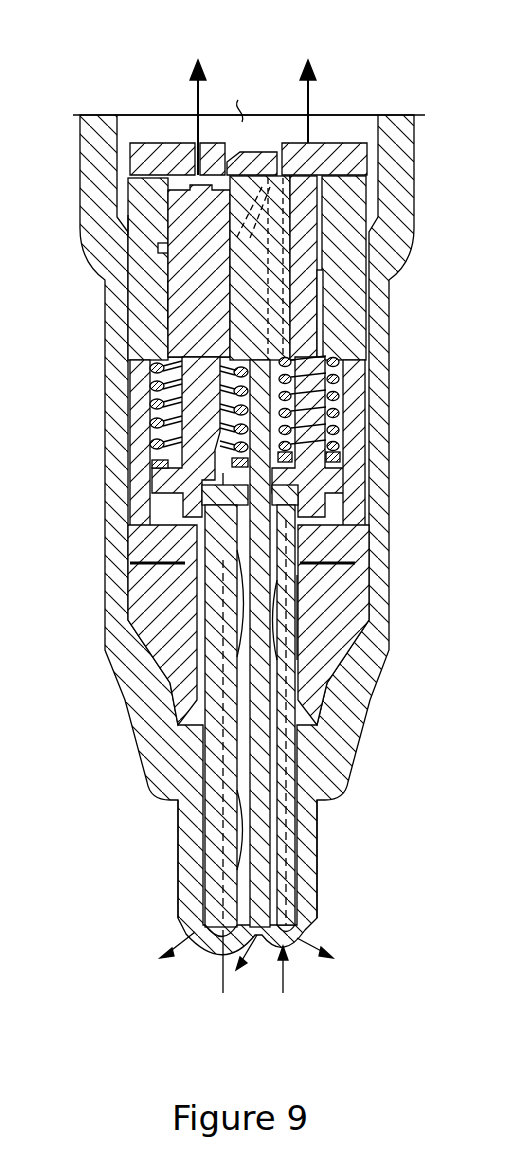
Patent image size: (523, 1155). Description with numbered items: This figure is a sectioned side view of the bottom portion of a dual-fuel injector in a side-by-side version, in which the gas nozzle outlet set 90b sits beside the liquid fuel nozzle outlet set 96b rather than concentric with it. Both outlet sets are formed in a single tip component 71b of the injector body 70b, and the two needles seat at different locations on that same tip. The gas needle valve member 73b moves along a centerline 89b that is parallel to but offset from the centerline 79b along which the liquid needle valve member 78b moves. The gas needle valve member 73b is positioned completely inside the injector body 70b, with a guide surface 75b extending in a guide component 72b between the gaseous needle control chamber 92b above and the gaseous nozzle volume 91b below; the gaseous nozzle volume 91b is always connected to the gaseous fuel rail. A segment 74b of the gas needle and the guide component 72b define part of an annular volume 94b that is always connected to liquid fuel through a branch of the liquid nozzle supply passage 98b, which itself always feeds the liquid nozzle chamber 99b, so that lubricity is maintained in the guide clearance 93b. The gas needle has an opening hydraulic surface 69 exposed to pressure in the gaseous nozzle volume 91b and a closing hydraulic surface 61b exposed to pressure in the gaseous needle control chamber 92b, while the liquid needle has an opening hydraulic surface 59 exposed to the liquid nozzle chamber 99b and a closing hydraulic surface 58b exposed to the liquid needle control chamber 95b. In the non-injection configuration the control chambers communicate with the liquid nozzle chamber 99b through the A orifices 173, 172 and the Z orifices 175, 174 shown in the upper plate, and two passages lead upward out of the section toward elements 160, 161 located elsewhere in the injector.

The fuel supply line 160 is at (310, 58).
The fuel supply line 161 is at (198, 58).
The A orifice 173 is at (195, 178).
The Z orifice 175 is at (233, 173).
The Z orifice 174 is at (293, 173).
The closing hydraulic surface 58b is at (290, 173).
The gaseous needle control chamber 92b is at (190, 168).
The liquid needle control chamber 95b is at (337, 160).
The closing hydraulic surface 61b is at (177, 180).
The gas needle valve member 73b is at (177, 217).
The annular volume 94b is at (160, 242).
The segment 74b is at (130, 225).
The guide clearance 93b is at (162, 305).
The guide surface 75b is at (180, 350).
The opening hydraulic surface 69 is at (130, 360).
The A orifice 172 is at (317, 187).
The liquid nozzle supply passage 98b is at (310, 233).
The opening hydraulic surface 59 is at (323, 283).
The liquid needle valve member 78b is at (323, 297).
The guide component 72b is at (368, 320).
The injector body 70b is at (389, 395).
The liquid nozzle chamber 99b is at (333, 520).
The gaseous nozzle volume 91b is at (132, 530).
The centerline 89b is at (210, 810).
The centerline 79b is at (290, 807).
The tip component 71b is at (317, 857).
The gas nozzle outlet set 90b is at (200, 930).
The liquid fuel nozzle outlet set 96b is at (303, 932).